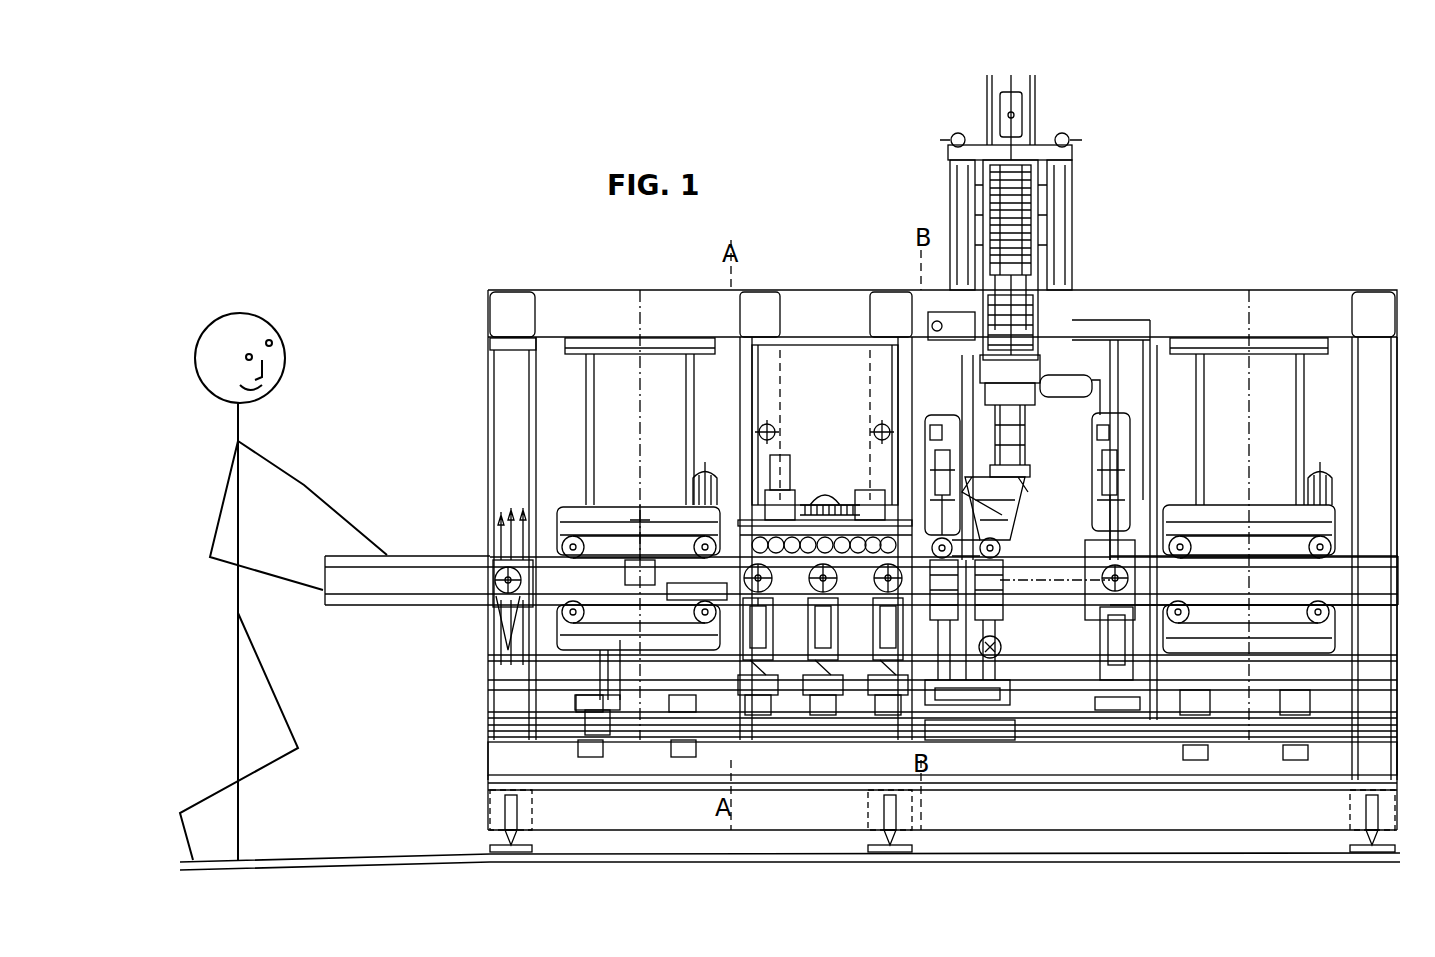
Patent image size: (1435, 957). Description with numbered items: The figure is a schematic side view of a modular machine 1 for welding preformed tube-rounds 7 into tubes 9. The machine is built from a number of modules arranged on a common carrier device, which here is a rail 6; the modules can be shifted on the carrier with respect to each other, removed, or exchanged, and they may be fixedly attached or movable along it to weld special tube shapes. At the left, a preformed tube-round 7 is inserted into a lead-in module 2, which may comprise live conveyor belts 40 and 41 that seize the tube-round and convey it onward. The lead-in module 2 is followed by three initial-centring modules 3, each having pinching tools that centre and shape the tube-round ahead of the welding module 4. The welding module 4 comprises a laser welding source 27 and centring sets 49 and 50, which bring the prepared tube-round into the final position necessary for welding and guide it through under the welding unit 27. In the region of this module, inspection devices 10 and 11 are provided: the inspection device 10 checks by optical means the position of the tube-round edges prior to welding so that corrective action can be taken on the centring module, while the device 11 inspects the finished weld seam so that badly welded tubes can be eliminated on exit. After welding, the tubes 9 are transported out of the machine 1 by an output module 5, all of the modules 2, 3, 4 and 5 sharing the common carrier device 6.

The machine 1 is at (540, 283).
The lead-in module 2 is at (566, 500).
The initial-centring module 3 is at (790, 690).
The welding module 4 is at (1006, 550).
The output module 5 is at (1222, 505).
The rail 6 is at (1017, 730).
The tube-round 7 is at (458, 568).
The tube 9 is at (1368, 560).
The inspection device 10 is at (939, 426).
The inspection device 11 is at (1090, 446).
The laser welding source 27 is at (1020, 482).
The live conveyor belt 40 is at (602, 525).
The live conveyor belt 41 is at (604, 652).
The centring set 49 is at (948, 722).
The centring set 50 is at (1002, 646).